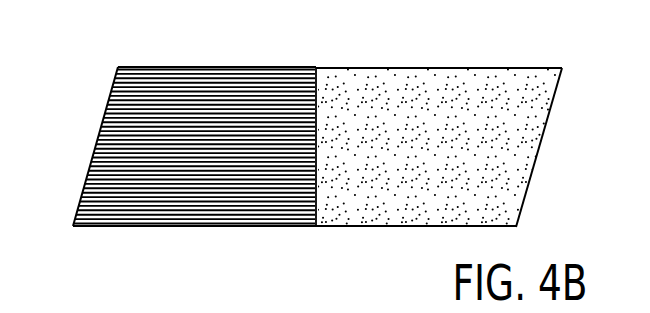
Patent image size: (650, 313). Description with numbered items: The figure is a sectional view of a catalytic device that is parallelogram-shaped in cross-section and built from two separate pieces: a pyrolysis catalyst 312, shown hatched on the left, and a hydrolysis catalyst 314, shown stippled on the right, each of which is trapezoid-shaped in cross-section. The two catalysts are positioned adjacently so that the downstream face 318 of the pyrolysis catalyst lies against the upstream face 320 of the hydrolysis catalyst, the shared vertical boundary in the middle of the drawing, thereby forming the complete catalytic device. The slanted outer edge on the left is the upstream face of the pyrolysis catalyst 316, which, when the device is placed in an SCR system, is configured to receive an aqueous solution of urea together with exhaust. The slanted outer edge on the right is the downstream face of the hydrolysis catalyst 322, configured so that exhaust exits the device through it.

The pyrolysis catalyst 312 is at (215, 85).
The hydrolysis catalyst 314 is at (470, 88).
The upstream face of the pyrolysis catalyst 316 is at (97, 143).
The downstream face of the pyrolysis catalyst 318 is at (317, 203).
The upstream face of the hydrolysis catalyst 320 is at (313, 85).
The downstream face of the hydrolysis catalyst 322 is at (543, 133).